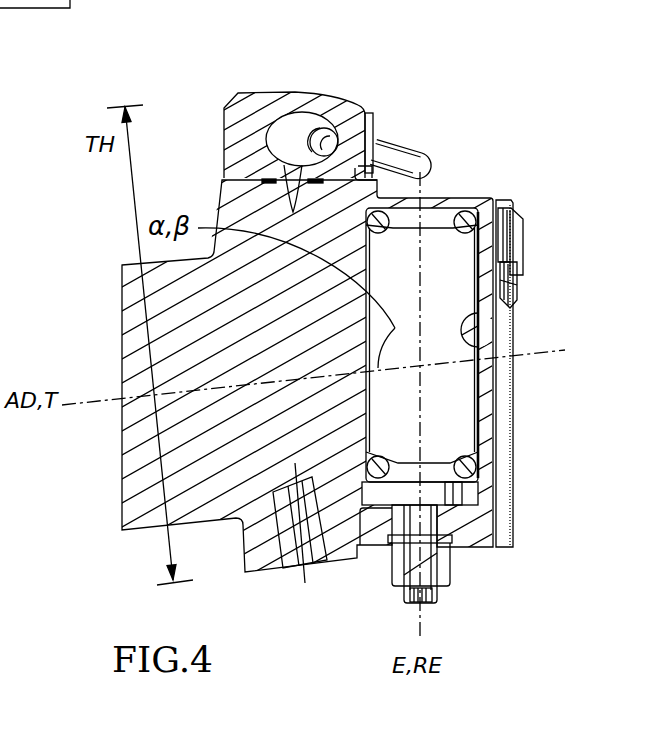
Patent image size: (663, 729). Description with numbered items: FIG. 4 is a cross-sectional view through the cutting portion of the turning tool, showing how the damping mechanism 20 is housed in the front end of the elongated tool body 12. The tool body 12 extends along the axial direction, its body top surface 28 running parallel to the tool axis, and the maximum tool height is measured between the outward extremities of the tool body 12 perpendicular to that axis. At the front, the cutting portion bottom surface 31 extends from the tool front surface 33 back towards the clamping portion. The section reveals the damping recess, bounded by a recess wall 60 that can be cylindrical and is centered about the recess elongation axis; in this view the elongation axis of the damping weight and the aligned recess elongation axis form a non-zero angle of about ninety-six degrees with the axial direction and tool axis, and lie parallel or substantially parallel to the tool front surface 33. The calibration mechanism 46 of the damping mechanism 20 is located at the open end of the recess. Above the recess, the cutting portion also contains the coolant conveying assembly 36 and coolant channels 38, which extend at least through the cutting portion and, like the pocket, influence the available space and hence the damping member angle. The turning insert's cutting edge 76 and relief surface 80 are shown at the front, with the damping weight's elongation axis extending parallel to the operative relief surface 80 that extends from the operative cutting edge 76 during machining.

The tool body 12 is at (328, 364).
The damping mechanism 20 is at (446, 190).
The body top surface 28 is at (128, 262).
The cutting portion bottom surface 31 is at (262, 573).
The tool front surface 33 is at (503, 412).
The coolant conveying assembly 36 is at (300, 88).
The coolant channels 38 is at (299, 128).
The calibration mechanism 46 is at (462, 572).
The recess wall 60 is at (500, 350).
The cutting edge 76 is at (517, 218).
The relief surface 80 is at (518, 240).